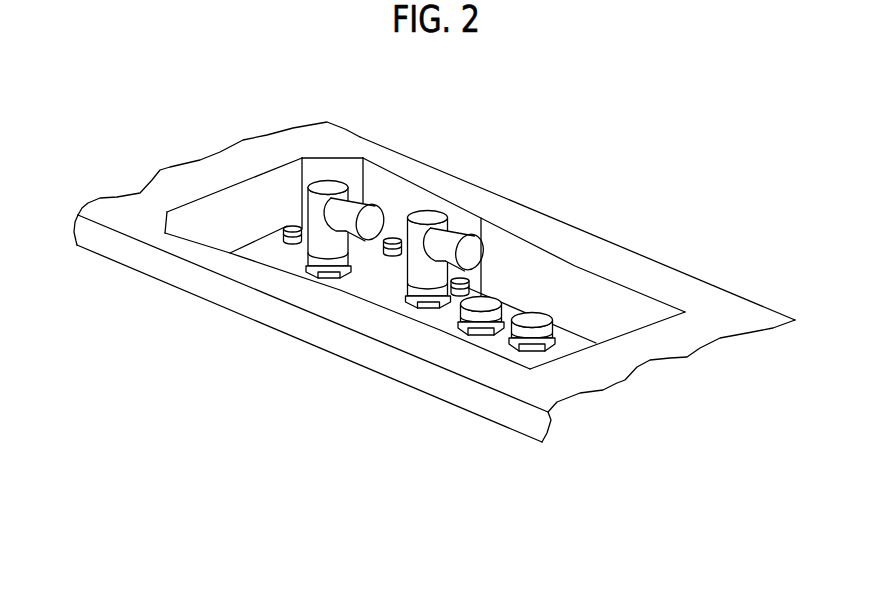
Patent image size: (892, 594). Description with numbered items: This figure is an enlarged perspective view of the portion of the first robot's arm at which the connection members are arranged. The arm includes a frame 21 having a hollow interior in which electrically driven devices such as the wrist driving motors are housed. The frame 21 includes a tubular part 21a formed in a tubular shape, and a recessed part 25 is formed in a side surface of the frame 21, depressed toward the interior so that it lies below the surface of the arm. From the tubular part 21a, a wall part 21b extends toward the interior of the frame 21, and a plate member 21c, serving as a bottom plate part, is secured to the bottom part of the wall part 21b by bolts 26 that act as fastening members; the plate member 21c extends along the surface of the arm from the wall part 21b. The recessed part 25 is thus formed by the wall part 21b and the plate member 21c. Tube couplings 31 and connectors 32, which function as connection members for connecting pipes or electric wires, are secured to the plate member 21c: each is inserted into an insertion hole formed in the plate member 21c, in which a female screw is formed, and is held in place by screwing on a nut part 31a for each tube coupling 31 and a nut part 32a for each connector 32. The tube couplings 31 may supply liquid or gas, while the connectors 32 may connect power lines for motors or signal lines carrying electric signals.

The frame 21 is at (448, 392).
The tubular part 21a is at (715, 313).
The wall part 21b is at (205, 218).
The plate member 21c is at (367, 286).
The recessed part 25 is at (620, 302).
The bolt 26 is at (290, 227).
The tube coupling 31 is at (330, 187).
The nut part 31a is at (328, 278).
The connector 32 is at (533, 322).
The nut part 32a is at (484, 338).